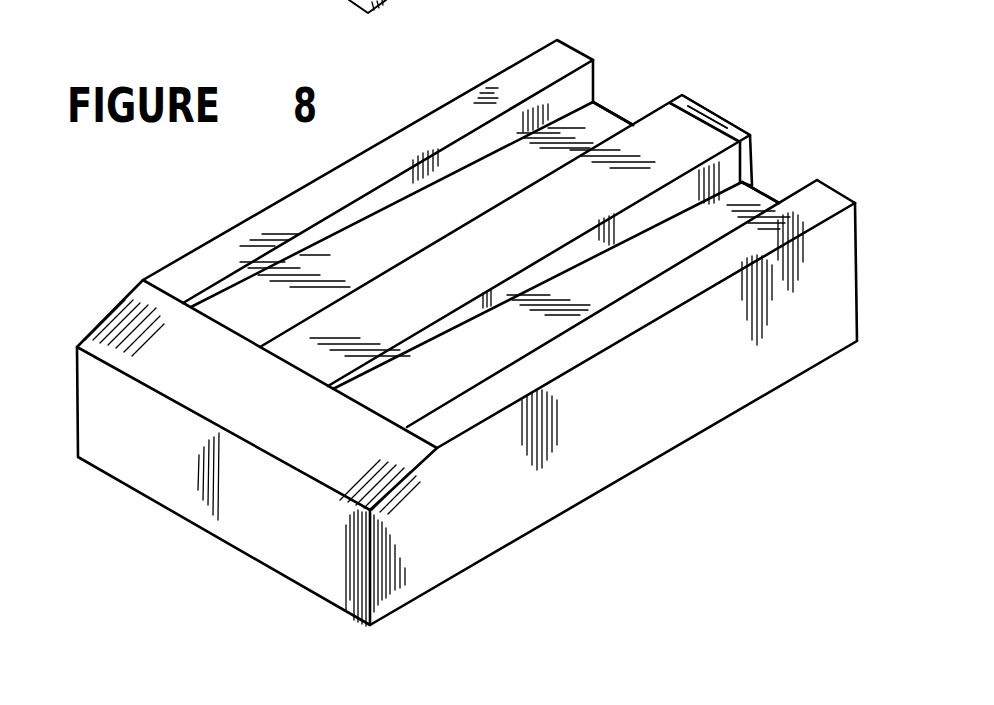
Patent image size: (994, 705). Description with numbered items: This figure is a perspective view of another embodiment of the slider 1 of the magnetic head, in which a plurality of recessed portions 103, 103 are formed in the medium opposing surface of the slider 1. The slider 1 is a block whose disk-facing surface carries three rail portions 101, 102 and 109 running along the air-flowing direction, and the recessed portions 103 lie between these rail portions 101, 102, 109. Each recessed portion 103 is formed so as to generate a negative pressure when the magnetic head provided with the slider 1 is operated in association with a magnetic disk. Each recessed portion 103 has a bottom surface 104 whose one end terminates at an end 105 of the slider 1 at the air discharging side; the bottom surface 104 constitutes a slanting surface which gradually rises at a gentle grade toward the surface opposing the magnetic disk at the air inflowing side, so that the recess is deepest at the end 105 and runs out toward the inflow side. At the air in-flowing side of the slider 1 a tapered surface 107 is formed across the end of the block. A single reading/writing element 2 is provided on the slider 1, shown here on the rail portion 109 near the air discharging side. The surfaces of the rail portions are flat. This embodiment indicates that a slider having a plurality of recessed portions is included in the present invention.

The slider 1 is at (650, 456).
The reading/writing element 2 is at (715, 113).
The rail portion 101 is at (458, 128).
The rail portion 102 is at (714, 265).
The recessed portion 103 is at (528, 168).
The bottom surface 104 is at (344, 240).
The end of the slider 105 is at (628, 123).
The tapered surface 107 is at (153, 348).
The rail portion 109 is at (644, 147).